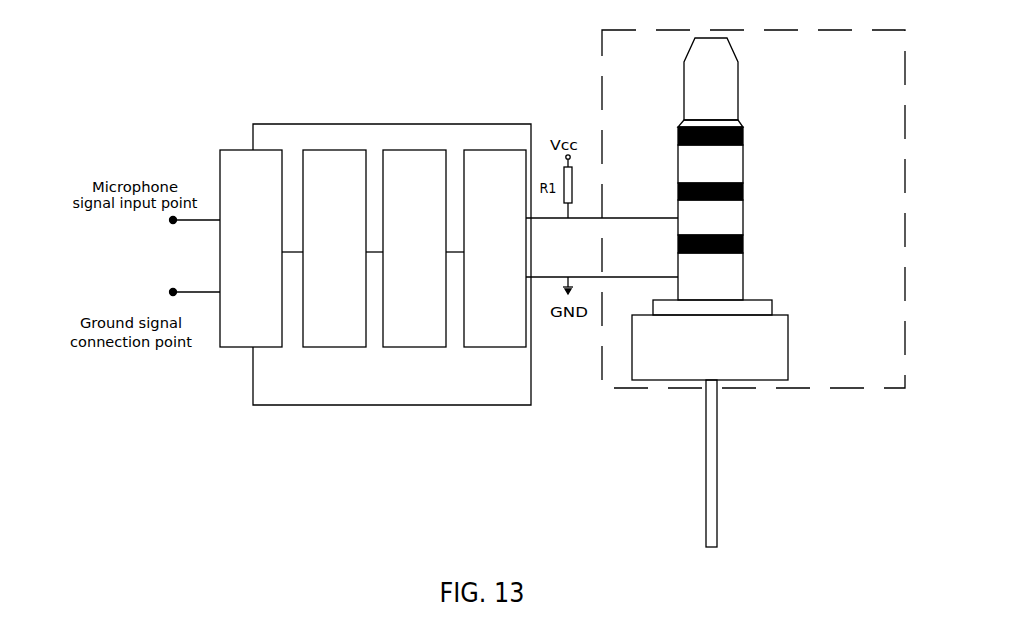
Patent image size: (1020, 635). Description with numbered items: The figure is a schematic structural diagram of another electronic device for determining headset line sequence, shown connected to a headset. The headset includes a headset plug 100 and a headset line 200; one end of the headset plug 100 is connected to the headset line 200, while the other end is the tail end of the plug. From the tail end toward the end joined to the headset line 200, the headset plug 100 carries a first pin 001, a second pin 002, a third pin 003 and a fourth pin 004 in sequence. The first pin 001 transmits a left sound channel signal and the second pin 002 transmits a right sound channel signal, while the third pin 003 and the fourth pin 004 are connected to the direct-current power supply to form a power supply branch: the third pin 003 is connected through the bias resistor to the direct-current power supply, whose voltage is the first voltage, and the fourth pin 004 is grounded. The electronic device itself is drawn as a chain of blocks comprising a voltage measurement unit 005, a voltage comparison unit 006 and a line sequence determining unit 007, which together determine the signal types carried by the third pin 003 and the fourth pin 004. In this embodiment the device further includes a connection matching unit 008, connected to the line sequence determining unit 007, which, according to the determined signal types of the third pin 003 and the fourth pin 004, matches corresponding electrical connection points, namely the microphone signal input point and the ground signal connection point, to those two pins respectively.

The headset plug 100 is at (600, 108).
The first pin 001 is at (725, 102).
The second pin 002 is at (720, 165).
The third pin 003 is at (720, 215).
The fourth pin 004 is at (722, 285).
The headset line 200 is at (713, 413).
The voltage measurement unit 005 is at (490, 348).
The voltage comparison unit 006 is at (415, 348).
The line sequence determining unit 007 is at (332, 348).
The connection matching unit 008 is at (223, 348).